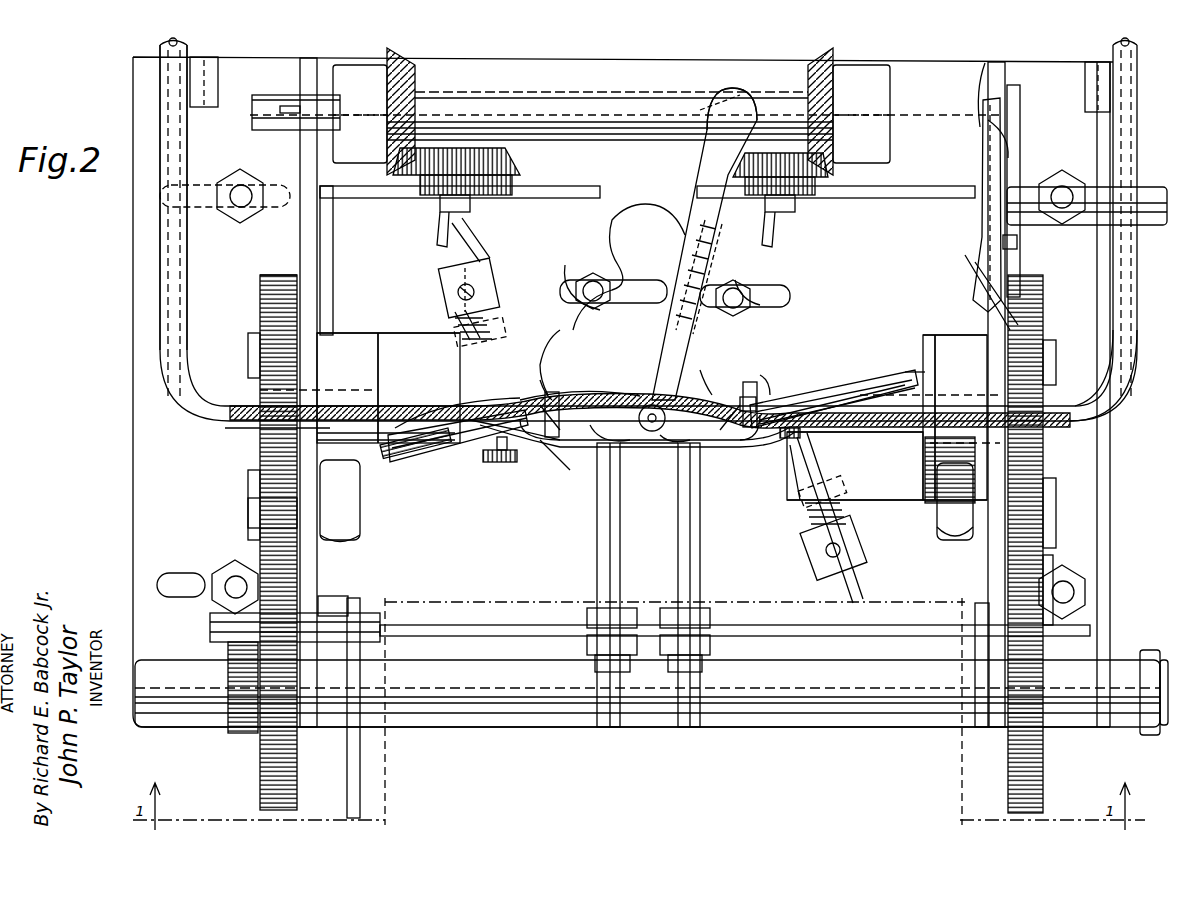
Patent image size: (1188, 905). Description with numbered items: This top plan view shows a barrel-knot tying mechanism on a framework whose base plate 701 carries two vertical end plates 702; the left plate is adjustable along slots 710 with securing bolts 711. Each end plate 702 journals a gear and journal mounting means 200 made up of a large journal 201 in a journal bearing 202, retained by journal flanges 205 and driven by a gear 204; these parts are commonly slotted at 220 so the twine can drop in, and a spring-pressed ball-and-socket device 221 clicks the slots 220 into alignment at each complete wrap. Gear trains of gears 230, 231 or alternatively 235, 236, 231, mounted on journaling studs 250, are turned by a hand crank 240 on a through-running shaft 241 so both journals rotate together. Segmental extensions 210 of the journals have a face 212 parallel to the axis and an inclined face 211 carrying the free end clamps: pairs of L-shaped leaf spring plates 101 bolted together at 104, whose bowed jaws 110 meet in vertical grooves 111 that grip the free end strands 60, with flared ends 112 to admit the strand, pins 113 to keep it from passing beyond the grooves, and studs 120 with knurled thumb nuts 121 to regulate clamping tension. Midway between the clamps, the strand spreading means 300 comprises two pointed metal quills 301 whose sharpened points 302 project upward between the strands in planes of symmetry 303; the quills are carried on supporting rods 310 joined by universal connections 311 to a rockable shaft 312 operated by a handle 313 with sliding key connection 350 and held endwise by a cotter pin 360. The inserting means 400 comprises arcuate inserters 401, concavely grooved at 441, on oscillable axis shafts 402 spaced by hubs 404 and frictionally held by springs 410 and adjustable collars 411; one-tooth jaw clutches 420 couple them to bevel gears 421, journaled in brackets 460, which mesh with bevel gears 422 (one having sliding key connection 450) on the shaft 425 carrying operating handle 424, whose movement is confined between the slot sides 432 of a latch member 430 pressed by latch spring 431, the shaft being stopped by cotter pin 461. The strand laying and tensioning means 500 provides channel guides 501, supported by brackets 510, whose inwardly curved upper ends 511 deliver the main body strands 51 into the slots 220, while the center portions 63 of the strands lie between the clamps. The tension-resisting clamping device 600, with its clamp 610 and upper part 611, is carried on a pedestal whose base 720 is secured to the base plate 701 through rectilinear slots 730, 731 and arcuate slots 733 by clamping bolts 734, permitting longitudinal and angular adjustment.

The main body strands 51 is at (1110, 398).
The free end strands 60 is at (560, 435).
The center portions of strands 63 is at (750, 503).
The leaf spring plates 101 is at (880, 380).
The bolts 104 is at (930, 395).
The clamping jaws 110 is at (822, 405).
The strand receiving grooves 111 is at (545, 405).
The flared end portions 112 is at (624, 374).
The pins 113 is at (763, 386).
The studs 120 is at (750, 395).
The knurled thumb nuts 121 is at (495, 518).
The gear and journal mounting means 200 is at (887, 511).
The journals 201 is at (378, 345).
The journal bearings 202 is at (340, 335).
The driving gear 204 is at (260, 385).
The journal flanges 205 is at (362, 530).
The segmental extensions 210 is at (393, 338).
The clamp mounting face 211 is at (395, 470).
The axially parallel face 212 is at (870, 480).
The slots 220 is at (340, 405).
The alignment and retaining device 221 is at (950, 530).
The gear 230 is at (1050, 576).
The gear 231 is at (258, 772).
The gear 235 is at (280, 280).
The gear 236 is at (250, 482).
The hand crank 240 is at (1148, 650).
The through running shaft 241 is at (775, 705).
The journaling studs 250 is at (248, 512).
The strand spreading means 300 is at (649, 488).
The metal quills 301 is at (585, 392).
The sharpened points 302 is at (620, 395).
The planes of symmetry 303 is at (680, 400).
The supporting rods 310 is at (600, 558).
The universally adjustable connections 311 is at (595, 608).
The rockable shaft 312 is at (470, 612).
The operating handle 313 is at (360, 775).
The sliding key connection 350 is at (365, 612).
The cotter pin 360 is at (960, 645).
The inserting means 400 is at (440, 475).
The arcuate inserters 401 is at (420, 470).
The axis shaft 402 is at (505, 345).
The mounting hub 404 is at (450, 402).
The spring 410 is at (460, 325).
The adjustable collar 411 is at (490, 283).
The jaw clutch connections 420 is at (437, 236).
The bevel gears 421 is at (410, 165).
The bevel gears 422 is at (415, 85).
The operating handle 424 is at (1020, 175).
The shaft 425 is at (655, 100).
The latch member 430 is at (990, 213).
The latch spring 431 is at (980, 277).
The slot sides 432 is at (1010, 160).
The concave grooves 441 is at (510, 462).
The sliding key connection 450 is at (283, 106).
The brackets 460 is at (350, 199).
The cotter pin 461 is at (980, 95).
The strand laying and tensioning means 500 is at (151, 296).
The channel guides 501 is at (165, 318).
The brackets 510 is at (215, 65).
The curved upper ends 511 is at (1110, 418).
The clamping means 600 is at (655, 400).
The clamp 610 is at (747, 230).
The lever knob 611 is at (735, 90).
The base plate 701 is at (133, 396).
The end plates 702 is at (318, 282).
The slots 710 is at (227, 178).
The securing bolts 711 is at (245, 190).
The pedestal base 720 is at (617, 218).
The rectilinear slot 730 is at (555, 470).
The rectilinear slots 731 is at (598, 268).
The arcuate slots 733 is at (655, 303).
The clamping bolts 734 is at (585, 280).